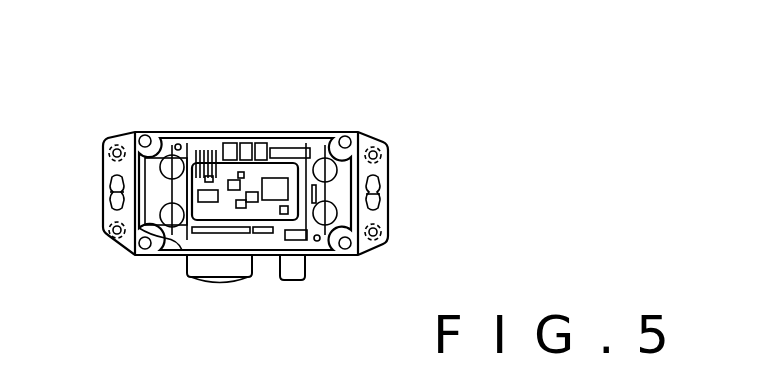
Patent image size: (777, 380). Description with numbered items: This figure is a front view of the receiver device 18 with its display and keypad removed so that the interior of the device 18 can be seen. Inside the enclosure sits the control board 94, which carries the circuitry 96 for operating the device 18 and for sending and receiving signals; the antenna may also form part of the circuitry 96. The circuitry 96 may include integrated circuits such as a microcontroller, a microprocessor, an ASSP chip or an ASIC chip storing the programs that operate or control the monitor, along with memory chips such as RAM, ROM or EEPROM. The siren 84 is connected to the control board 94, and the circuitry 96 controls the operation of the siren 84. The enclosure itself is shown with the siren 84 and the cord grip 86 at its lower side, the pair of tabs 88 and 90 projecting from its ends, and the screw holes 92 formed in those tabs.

The receiver device 18 is at (235, 115).
The siren 84 is at (233, 283).
The cord grip 86 is at (295, 282).
The tab 88 is at (102, 227).
The tab 90 is at (390, 157).
The screw holes 92 is at (112, 191).
The control board 94 is at (262, 172).
The circuitry 96 is at (189, 131).